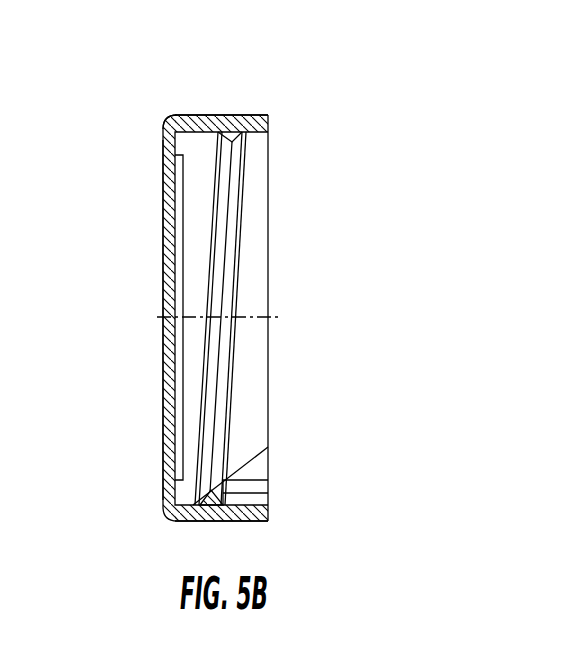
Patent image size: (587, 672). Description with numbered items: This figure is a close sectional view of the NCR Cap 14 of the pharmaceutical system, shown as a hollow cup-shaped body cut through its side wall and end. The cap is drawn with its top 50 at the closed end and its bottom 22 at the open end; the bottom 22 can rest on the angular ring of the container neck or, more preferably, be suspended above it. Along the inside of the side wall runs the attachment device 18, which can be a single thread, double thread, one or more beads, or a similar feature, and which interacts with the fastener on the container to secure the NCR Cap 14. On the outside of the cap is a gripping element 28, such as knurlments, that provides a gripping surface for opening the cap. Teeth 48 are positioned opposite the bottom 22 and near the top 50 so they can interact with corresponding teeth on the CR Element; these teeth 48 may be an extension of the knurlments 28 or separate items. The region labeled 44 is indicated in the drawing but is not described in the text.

The NCR Cap 14 is at (98, 133).
The closure cap 44 is at (222, 97).
The teeth 48 is at (166, 122).
The gripping element 28 is at (240, 114).
The bottom 22 is at (268, 119).
The attachment device 18 is at (233, 243).
The top 50 is at (163, 267).